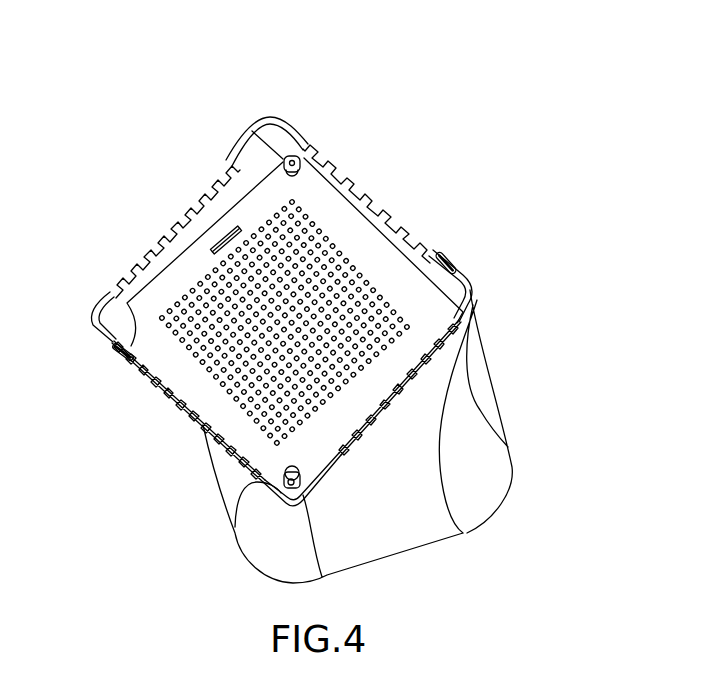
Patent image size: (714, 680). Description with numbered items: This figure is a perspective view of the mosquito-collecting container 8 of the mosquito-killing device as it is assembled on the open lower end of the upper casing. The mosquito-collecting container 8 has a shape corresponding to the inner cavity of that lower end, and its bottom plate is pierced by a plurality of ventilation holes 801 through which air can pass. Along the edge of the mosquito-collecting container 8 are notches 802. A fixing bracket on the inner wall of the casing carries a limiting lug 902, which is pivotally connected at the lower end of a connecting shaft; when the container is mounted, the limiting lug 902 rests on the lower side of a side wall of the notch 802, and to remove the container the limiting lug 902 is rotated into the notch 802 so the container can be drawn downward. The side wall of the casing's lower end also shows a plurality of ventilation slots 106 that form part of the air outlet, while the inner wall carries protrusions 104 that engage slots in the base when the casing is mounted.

The mosquito-collecting container 8 is at (246, 231).
The ventilation holes 801 is at (225, 386).
The notches 802 is at (283, 158).
The protrusions 104 is at (450, 253).
The ventilation slots 106 is at (188, 205).
The limiting lug 902 is at (282, 488).